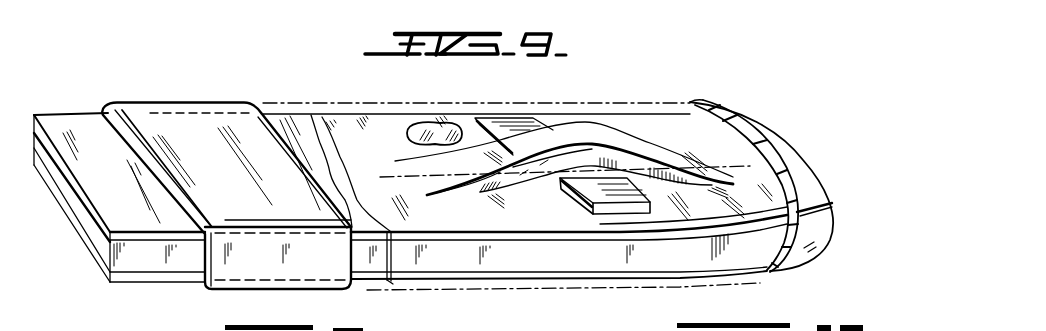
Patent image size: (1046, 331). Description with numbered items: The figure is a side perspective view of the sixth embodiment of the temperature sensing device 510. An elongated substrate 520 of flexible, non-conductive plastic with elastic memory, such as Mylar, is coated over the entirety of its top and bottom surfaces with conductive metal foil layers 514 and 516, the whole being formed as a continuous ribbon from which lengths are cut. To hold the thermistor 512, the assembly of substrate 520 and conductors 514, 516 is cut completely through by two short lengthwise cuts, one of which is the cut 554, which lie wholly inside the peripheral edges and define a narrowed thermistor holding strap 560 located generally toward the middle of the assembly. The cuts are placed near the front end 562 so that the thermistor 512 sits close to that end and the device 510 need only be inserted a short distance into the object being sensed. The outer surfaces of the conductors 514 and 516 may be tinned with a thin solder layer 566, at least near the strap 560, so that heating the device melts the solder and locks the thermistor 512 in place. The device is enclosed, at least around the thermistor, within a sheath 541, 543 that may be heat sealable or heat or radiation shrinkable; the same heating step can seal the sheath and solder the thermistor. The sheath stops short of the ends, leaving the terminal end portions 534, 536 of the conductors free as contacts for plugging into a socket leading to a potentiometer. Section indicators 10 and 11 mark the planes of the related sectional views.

The temperature sensing device 510 is at (250, 88).
The thermistor 512 is at (575, 208).
The conductive metal foil layer 514 is at (627, 177).
The conductive metal foil layer 516 is at (340, 127).
The elongated substrate 520 is at (531, 262).
The terminal end portion 534 is at (143, 282).
The terminal end portion 536 is at (79, 114).
The sheath 541 is at (323, 292).
The sheath 543 is at (177, 123).
The cut 554 is at (481, 179).
The thermistor holding strap 560 is at (613, 121).
The front end 562 is at (830, 188).
The solder layer 566 is at (440, 128).
The section line 10- 10 is at (393, 190).
The section line 11- 11 is at (470, 83).